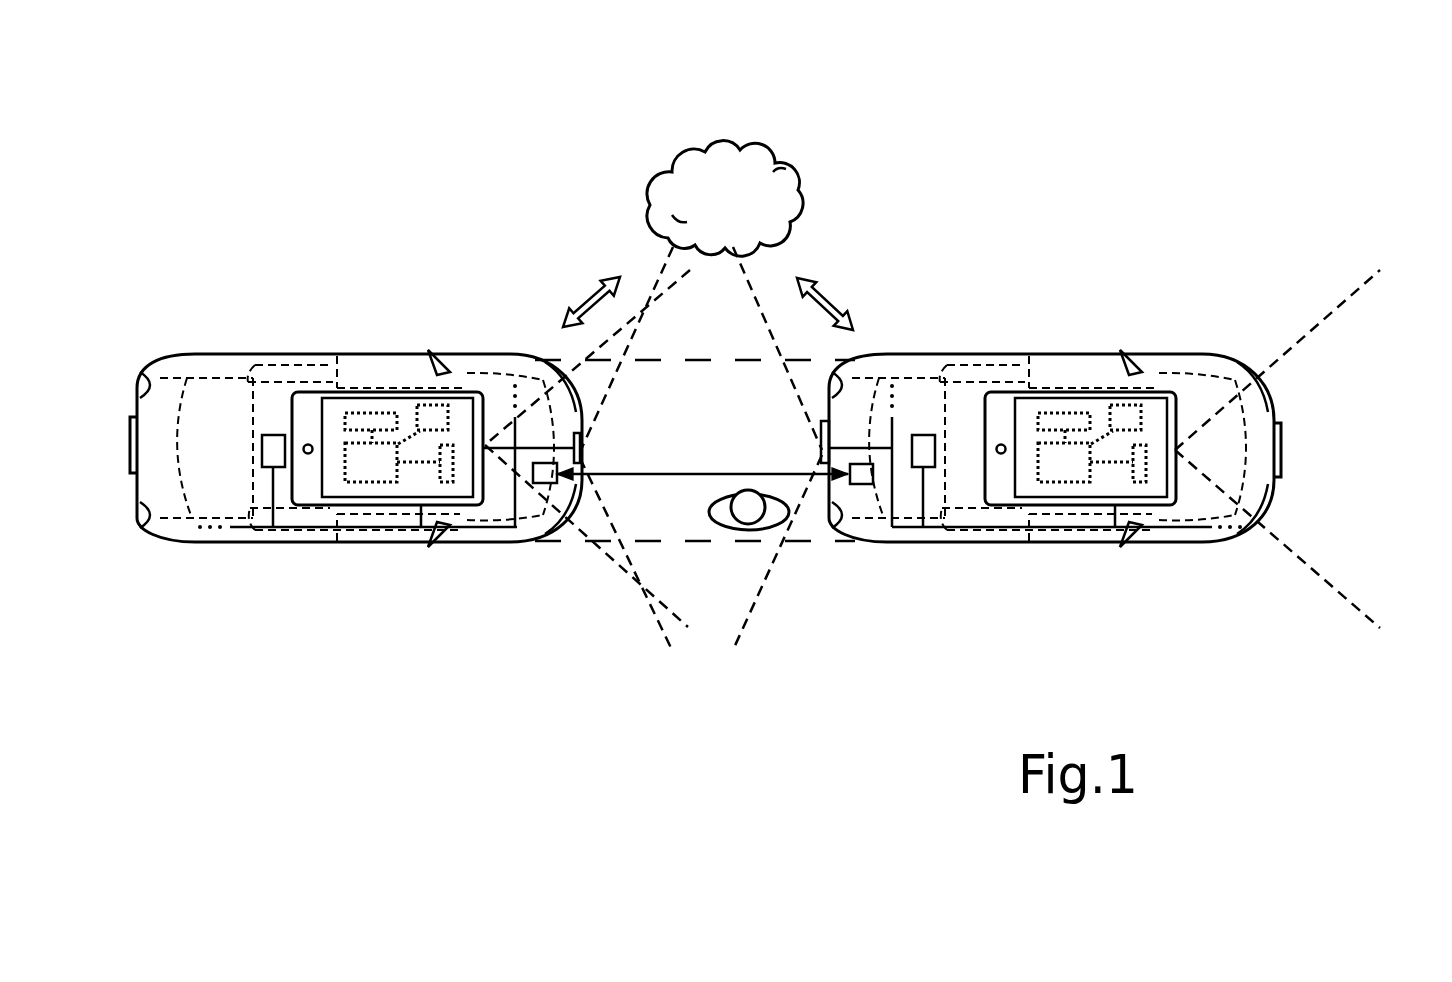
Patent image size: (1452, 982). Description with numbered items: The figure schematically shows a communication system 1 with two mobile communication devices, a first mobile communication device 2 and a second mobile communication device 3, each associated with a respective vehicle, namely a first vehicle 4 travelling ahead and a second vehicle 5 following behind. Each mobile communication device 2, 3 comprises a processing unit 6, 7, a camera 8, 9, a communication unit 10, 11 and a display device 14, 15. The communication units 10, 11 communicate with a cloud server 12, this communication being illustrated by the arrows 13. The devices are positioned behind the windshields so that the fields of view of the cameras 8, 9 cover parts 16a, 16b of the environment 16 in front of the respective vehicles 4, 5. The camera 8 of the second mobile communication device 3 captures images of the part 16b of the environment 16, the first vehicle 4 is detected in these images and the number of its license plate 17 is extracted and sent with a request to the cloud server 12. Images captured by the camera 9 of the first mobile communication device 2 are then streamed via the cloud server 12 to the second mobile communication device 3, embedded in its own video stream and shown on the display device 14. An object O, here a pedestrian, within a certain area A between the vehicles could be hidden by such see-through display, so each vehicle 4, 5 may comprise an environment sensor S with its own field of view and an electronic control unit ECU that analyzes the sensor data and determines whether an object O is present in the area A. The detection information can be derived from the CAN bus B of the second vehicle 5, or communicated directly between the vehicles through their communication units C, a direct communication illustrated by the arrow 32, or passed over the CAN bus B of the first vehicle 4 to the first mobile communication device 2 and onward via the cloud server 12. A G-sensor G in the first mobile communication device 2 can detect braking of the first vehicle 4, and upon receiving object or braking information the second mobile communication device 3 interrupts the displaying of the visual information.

The communication system 1 is at (970, 160).
The first mobile communication device 2 is at (1050, 383).
The second mobile communication device 3 is at (355, 388).
The first vehicle 4 is at (1068, 353).
The second vehicle 5 is at (376, 355).
The processing unit 6 is at (368, 473).
The processing unit 7 is at (1060, 472).
The camera 8 is at (450, 447).
The camera 9 is at (1140, 450).
The communication unit 10 is at (375, 418).
The communication unit 11 is at (1070, 415).
The cloud server 12 is at (724, 158).
The arrows 13 is at (587, 300).
The display device 14 is at (413, 450).
The display device 15 is at (1105, 447).
The environment 16 is at (672, 695).
The part of the environment 16a is at (1378, 459).
The part of the environment 16b is at (615, 448).
The license plate 17 is at (847, 424).
The arrow 32 is at (637, 478).
The certain area A is at (678, 542).
The CAN bus B is at (503, 530).
The communication unit C is at (545, 483).
The electronic control unit ECU is at (262, 450).
The G-sensor G is at (440, 410).
The object O is at (770, 492).
The environment sensor S is at (574, 440).